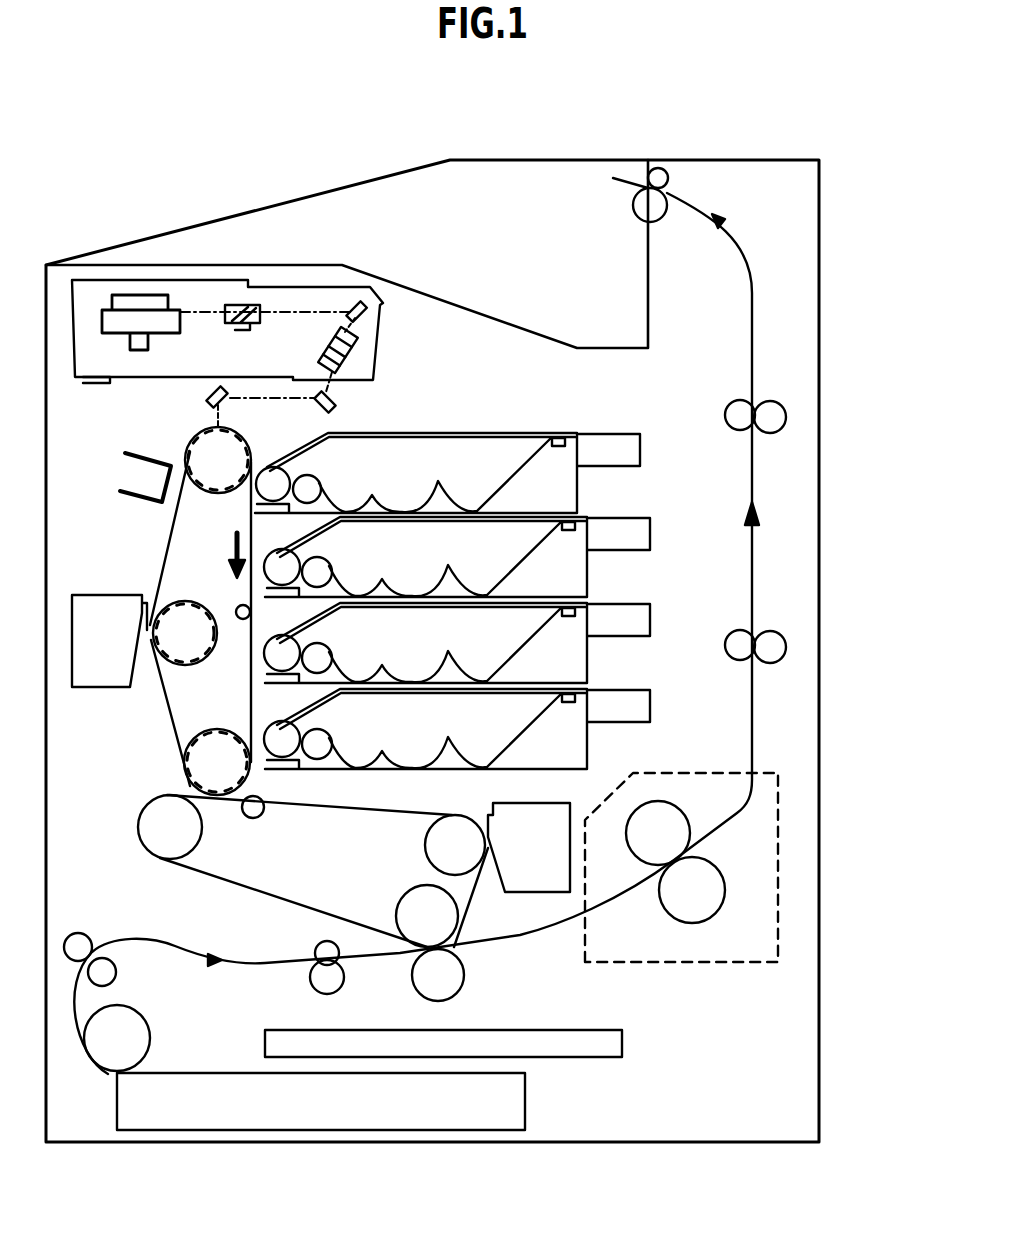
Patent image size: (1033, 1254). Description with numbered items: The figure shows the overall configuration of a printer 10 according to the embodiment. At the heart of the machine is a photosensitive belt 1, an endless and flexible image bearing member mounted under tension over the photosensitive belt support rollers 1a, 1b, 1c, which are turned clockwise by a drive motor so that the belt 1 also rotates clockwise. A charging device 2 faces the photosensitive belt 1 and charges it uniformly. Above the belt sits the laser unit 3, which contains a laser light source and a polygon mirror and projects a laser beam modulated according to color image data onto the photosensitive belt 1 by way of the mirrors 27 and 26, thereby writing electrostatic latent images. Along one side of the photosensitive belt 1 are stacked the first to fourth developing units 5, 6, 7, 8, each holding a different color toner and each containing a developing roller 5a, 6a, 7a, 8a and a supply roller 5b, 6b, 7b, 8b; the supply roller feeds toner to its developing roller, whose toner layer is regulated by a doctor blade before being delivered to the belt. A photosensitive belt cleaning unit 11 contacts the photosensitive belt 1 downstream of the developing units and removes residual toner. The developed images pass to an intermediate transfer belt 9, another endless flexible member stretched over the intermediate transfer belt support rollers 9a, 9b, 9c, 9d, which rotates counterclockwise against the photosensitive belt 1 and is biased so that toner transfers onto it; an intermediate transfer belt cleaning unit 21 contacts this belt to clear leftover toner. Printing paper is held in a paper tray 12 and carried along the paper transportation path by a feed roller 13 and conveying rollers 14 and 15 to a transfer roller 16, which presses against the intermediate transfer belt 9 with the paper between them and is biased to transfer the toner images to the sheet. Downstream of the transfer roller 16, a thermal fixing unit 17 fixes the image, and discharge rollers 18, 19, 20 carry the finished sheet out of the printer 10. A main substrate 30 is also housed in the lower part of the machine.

The printer 10 is at (704, 160).
The discharge roller 20 is at (669, 182).
The laser unit 3 is at (372, 333).
The mirror 26 is at (205, 392).
The mirror 27 is at (345, 402).
The charging device 2 is at (133, 453).
The photosensitive belt 1 is at (173, 611).
The photosensitive belt support roller 1a is at (200, 480).
The photosensitive belt support roller 1b is at (192, 606).
The photosensitive belt support roller 1c is at (203, 746).
The photosensitive belt cleaning unit 11 is at (95, 680).
The first developing unit 5 is at (468, 460).
The developing roller 5a is at (267, 465).
The supply roller 5b is at (307, 477).
The second developing unit 6 is at (482, 557).
The developing roller 6a is at (275, 553).
The supply roller 6b is at (315, 560).
The third developing unit 7 is at (482, 643).
The developing roller 7a is at (278, 638).
The supply roller 7b is at (339, 646).
The fourth developing unit 8 is at (482, 729).
The developing roller 8a is at (278, 724).
The supply roller 8b is at (339, 732).
The discharge roller 19 is at (777, 400).
The discharge roller 18 is at (777, 630).
The intermediate transfer belt 9 is at (313, 871).
The intermediate transfer belt support roller 9a is at (188, 833).
The intermediate transfer belt support roller 9b is at (412, 888).
The intermediate transfer belt support roller 9c is at (433, 823).
The intermediate transfer belt support roller 9d is at (260, 808).
The intermediate transfer belt cleaning unit 21 is at (535, 880).
The thermal fixing unit 17 is at (733, 963).
The transfer roller 16 is at (450, 980).
The conveying roller 15 is at (333, 990).
The conveying roller 14 is at (108, 967).
The feed roller 13 is at (143, 1042).
The main substrate 30 is at (578, 1030).
The paper tray 12 is at (526, 1097).